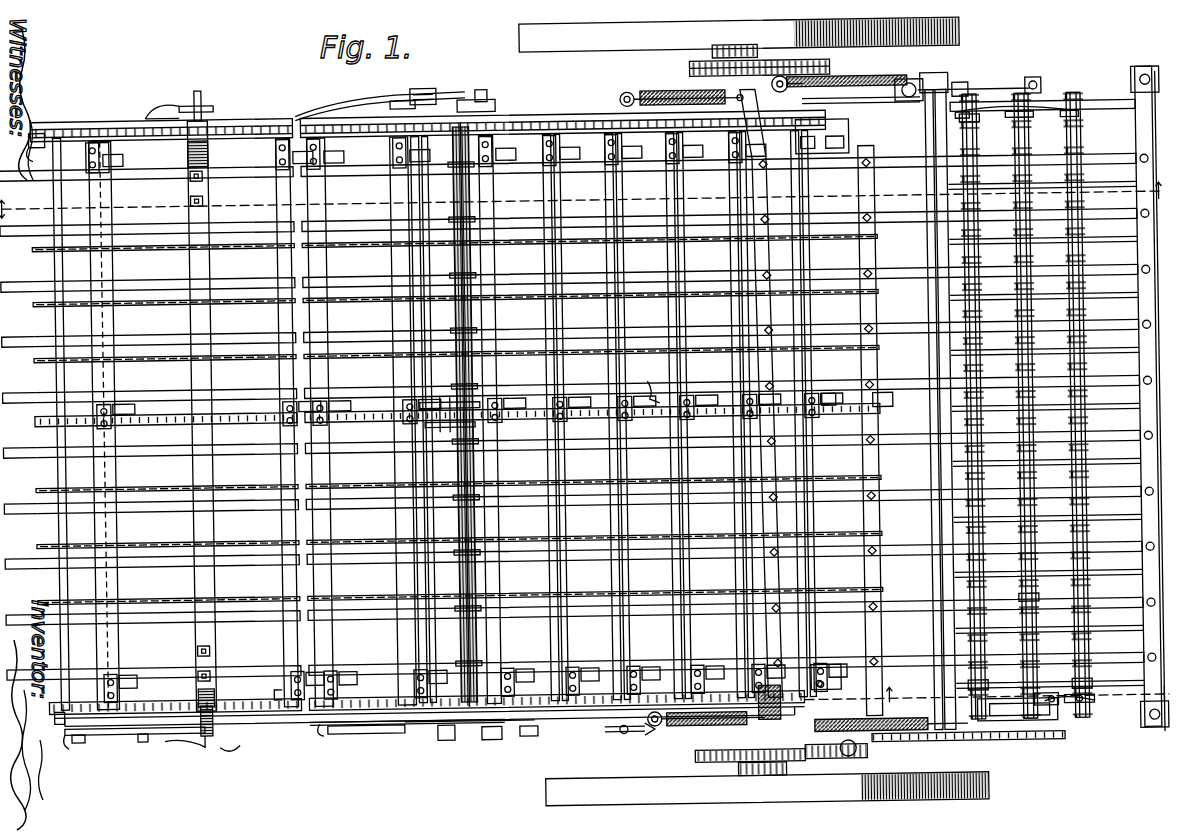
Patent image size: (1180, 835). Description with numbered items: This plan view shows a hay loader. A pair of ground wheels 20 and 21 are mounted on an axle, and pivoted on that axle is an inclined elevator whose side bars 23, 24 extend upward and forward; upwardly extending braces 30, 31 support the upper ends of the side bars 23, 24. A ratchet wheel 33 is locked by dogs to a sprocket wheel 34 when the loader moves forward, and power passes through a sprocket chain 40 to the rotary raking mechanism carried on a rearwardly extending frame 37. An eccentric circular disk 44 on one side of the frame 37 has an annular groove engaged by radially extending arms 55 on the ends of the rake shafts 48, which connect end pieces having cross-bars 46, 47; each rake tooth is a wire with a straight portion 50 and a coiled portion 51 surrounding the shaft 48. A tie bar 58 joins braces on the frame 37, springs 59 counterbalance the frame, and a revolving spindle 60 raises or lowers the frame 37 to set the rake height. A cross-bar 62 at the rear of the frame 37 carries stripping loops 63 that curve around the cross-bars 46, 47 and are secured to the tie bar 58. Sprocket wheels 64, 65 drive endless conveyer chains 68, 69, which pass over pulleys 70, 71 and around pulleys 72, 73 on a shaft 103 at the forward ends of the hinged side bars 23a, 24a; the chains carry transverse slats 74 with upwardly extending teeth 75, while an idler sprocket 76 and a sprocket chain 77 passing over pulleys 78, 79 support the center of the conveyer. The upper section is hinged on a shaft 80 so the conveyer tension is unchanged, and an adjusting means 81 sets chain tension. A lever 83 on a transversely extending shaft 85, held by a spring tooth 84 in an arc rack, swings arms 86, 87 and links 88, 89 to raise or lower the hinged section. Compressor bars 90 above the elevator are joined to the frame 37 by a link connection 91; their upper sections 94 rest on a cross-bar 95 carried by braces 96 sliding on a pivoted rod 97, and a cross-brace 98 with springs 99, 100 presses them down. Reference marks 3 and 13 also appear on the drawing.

The section line 3 is at (586, 202).
The section line 13 is at (992, 691).
The ground wheel 20 is at (975, 792).
The ground wheel 21 is at (973, 48).
The side bar 23 is at (564, 114).
The hinged side bar 23a is at (372, 136).
The side bar 24 is at (582, 710).
The hinged side bar 24a is at (396, 722).
The brace 30 is at (422, 86).
The brace 31 is at (431, 737).
The ratchet wheel 33 is at (713, 62).
The sprocket wheel 34 is at (740, 62).
The rearwardly extending frame 37 is at (1090, 110).
The sprocket chain 40 is at (930, 746).
The circular disk 44 is at (1046, 730).
The cross-bar 46 is at (1041, 108).
The cross-bar 47 is at (1032, 124).
The rake shaft 48 is at (1026, 478).
The straight portion 50 is at (1112, 575).
The coiled portion 51 is at (1070, 605).
The radially extending arm 55 is at (1069, 696).
The tie bar 58 is at (932, 476).
The spring 59 is at (846, 90).
The revolving spindle 60 is at (790, 62).
The cross-bar 62 is at (1147, 88).
The stripping loop 63 is at (1062, 520).
The sprocket wheel 64 is at (839, 680).
The sprocket wheel 65 is at (822, 136).
The endless conveyer chain 68 is at (262, 706).
The endless conveyer chain 69 is at (265, 122).
The pulley 70 is at (398, 98).
The pulley 71 is at (547, 466).
The pulley 72 is at (38, 126).
The pulley 73 is at (60, 730).
The transverse slat 74 is at (305, 466).
The tooth 75 is at (314, 400).
The idler sprocket 76 is at (840, 403).
The sprocket chain 77 is at (646, 379).
The pulley 78 is at (425, 400).
The pulley 79 is at (55, 404).
The shaft 80 is at (413, 520).
The adjusting means 81 is at (170, 730).
The lever 83 is at (620, 738).
The spring tooth 84 is at (524, 736).
The transversely extending shaft 85 is at (490, 96).
The arm 86 is at (483, 736).
The arm 87 is at (476, 98).
The link 88 is at (320, 732).
The link 89 is at (335, 104).
The compressor bar 90 is at (576, 288).
The link connection 91 is at (922, 508).
The upper section 94 is at (30, 300).
The cross-bar 95 is at (195, 465).
The brace 96 is at (192, 148).
The rod 97 is at (206, 101).
The cross-brace 98 is at (806, 432).
The spring 99 is at (668, 94).
The spring 100 is at (690, 727).
The shaft 103 is at (90, 186).